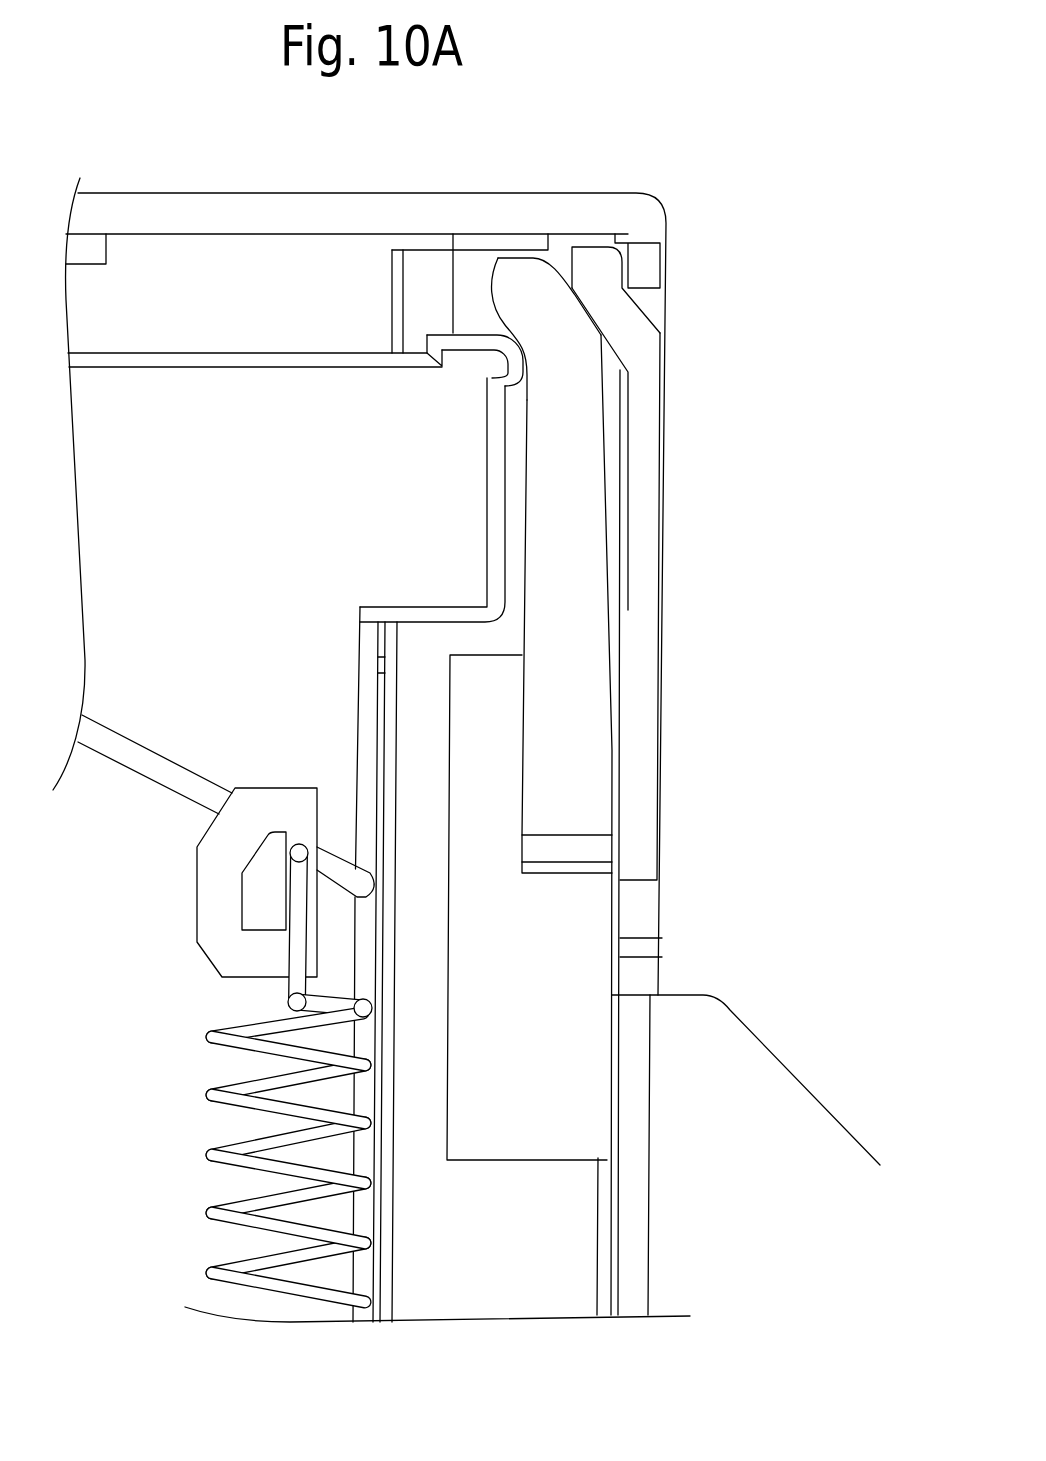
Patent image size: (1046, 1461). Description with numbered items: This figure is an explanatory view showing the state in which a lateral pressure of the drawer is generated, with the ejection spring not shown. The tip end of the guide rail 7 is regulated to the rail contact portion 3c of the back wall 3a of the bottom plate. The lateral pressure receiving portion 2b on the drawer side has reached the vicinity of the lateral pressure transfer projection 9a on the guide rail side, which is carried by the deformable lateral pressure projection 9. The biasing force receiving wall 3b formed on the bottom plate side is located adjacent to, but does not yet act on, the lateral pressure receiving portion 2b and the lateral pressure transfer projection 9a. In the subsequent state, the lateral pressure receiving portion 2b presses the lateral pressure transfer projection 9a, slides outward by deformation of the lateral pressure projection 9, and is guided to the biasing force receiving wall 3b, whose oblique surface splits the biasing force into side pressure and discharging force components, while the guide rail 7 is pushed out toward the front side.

The back wall 3a is at (334, 237).
The biasing force receiving wall 3b is at (580, 290).
The rail contact portion 3c is at (500, 235).
The lateral pressure receiving portion 2b is at (490, 358).
The lateral pressure projection 9 is at (558, 702).
The lateral pressure transfer projection 9a is at (532, 353).
The guide rail 7 is at (547, 930).